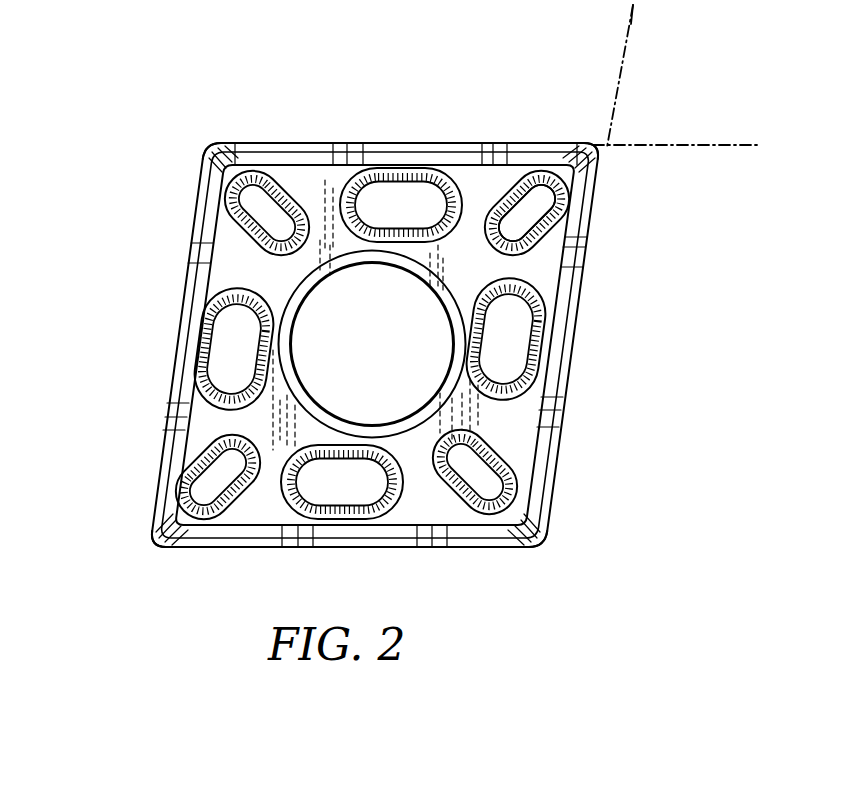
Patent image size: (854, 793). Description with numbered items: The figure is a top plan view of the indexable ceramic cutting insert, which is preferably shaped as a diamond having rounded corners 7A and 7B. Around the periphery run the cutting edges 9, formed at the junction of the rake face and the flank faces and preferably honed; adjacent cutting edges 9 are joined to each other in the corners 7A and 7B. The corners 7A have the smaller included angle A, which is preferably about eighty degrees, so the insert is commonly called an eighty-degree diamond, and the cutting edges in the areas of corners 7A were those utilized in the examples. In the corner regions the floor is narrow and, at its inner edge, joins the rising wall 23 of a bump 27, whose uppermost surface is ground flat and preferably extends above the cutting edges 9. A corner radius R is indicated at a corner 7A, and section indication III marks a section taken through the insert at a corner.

The rounded corner area 7A is at (595, 160).
The rounded corner area 7B is at (214, 146).
The cutting edge 9 is at (456, 143).
The rising wall 23 is at (557, 212).
The bump 27 is at (528, 200).
The corner radius R is at (157, 547).
The included angle A is at (638, 31).
The section line III- III is at (648, 145).